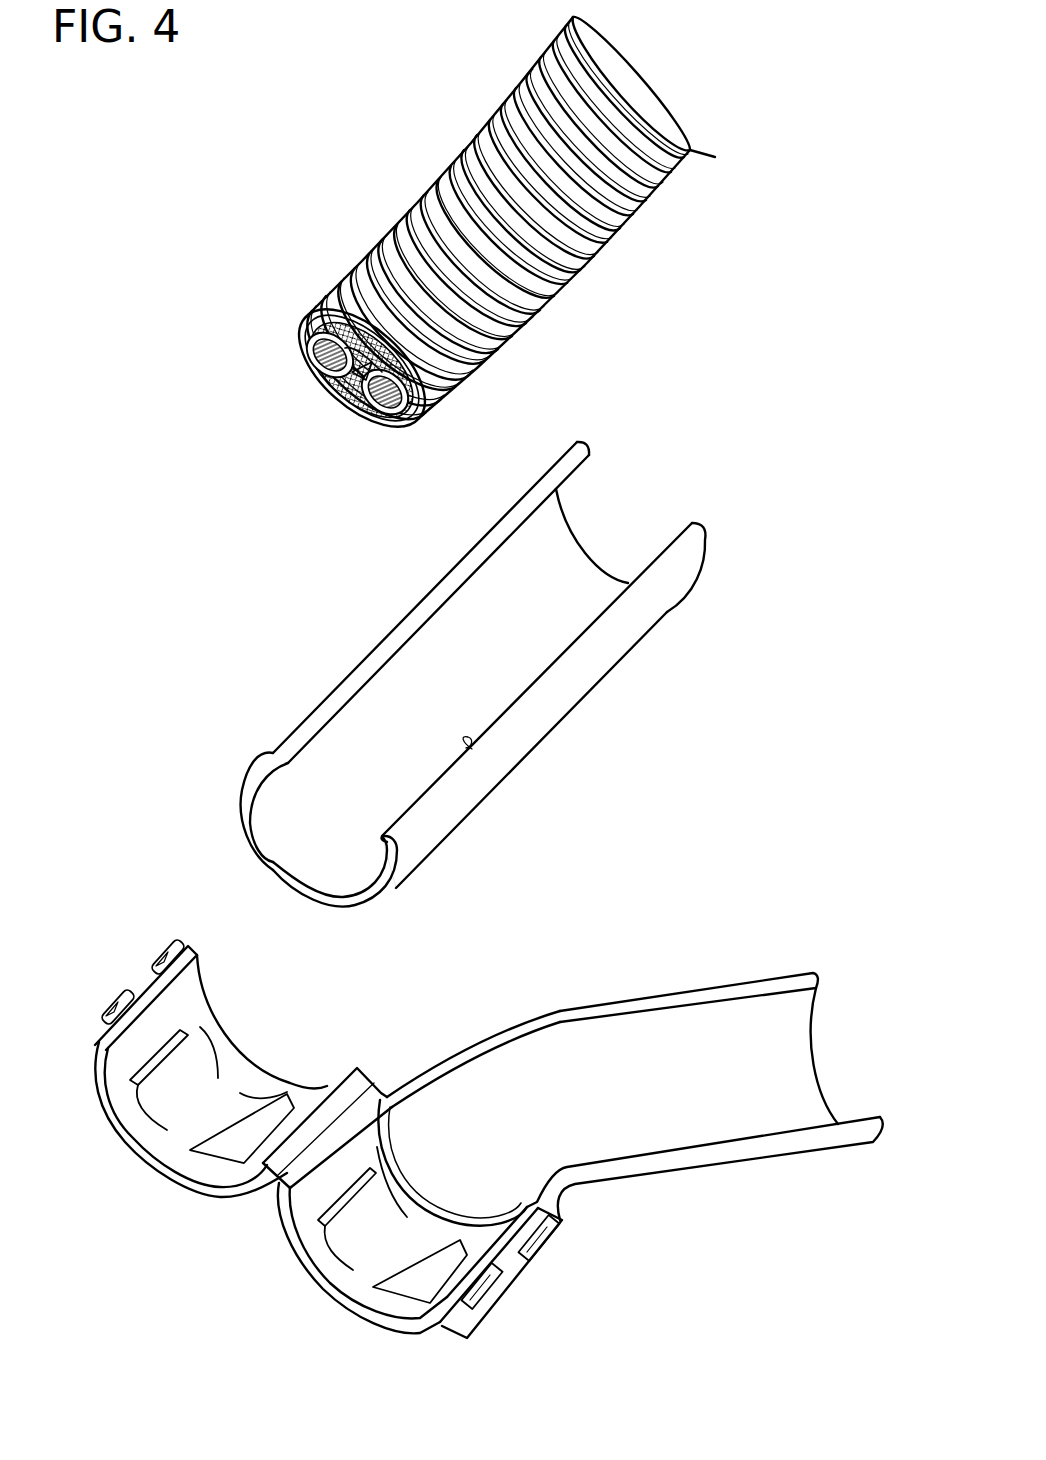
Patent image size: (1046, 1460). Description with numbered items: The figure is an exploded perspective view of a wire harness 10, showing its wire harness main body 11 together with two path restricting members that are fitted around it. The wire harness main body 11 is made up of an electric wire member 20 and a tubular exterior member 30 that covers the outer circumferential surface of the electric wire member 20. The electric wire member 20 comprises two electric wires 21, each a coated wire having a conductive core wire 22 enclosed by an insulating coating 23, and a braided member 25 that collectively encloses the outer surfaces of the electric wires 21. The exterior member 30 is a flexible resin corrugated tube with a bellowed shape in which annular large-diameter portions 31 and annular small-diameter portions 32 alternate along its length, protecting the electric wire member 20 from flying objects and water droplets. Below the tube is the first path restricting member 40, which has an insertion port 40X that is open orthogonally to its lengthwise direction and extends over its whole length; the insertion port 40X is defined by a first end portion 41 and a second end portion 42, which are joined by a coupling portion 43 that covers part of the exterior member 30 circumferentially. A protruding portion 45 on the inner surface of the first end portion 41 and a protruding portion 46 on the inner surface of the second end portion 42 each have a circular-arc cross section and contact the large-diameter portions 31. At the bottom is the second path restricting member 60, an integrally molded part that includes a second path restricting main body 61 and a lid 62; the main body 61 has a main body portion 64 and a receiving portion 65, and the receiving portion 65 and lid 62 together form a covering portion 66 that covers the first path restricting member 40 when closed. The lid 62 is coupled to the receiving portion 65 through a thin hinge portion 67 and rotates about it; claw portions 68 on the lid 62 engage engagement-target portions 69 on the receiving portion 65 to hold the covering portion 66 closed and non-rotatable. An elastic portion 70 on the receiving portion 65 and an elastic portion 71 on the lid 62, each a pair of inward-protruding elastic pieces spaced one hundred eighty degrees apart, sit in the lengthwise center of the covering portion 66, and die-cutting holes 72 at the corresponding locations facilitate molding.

The wire harness 10 is at (165, 125).
The wire harness main body 11 is at (420, 193).
The electric wire member 20 is at (435, 487).
The electric wire 21 is at (363, 408).
The core wire 22 is at (315, 376).
The insulating coating 23 is at (340, 385).
The braided member 25 is at (388, 420).
The exterior member 30 is at (330, 242).
The large-diameter portion 31 is at (350, 292).
The small-diameter portion 32 is at (320, 296).
The first path restricting member 40 is at (628, 660).
The insertion port 40X is at (472, 749).
The first end portion 41 is at (305, 745).
The second end portion 42 is at (402, 817).
The coupling portion 43 is at (423, 842).
The protruding portion 45 is at (288, 764).
The protruding portion 46 is at (383, 848).
The second path restricting member 60 is at (741, 1162).
The second path restricting main body 61 is at (738, 984).
The lid 62 is at (236, 1050).
The main body portion 64 is at (587, 1010).
The receiving portion 65 is at (430, 1335).
The covering portion 66 is at (126, 1144).
The hinge portion 67 is at (360, 1086).
The claw portion 68 is at (168, 930).
The engagement-target portion 69 is at (546, 1252).
The elastic portion 70 is at (378, 1156).
The elastic portion 71 is at (196, 1016).
The die-cutting hole 72 is at (130, 1077).